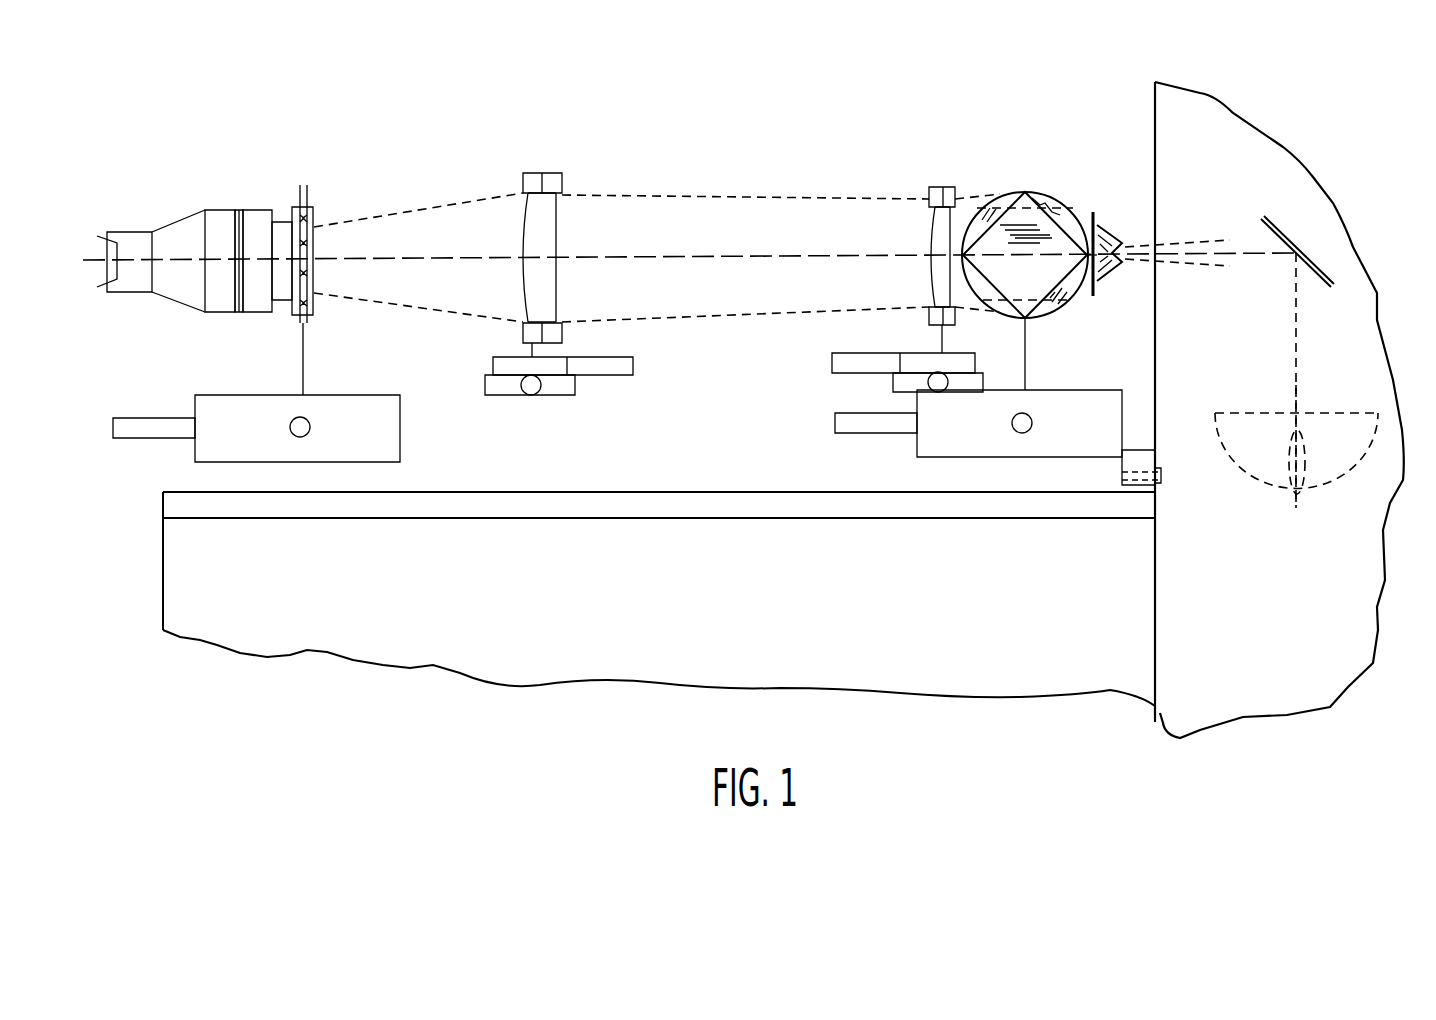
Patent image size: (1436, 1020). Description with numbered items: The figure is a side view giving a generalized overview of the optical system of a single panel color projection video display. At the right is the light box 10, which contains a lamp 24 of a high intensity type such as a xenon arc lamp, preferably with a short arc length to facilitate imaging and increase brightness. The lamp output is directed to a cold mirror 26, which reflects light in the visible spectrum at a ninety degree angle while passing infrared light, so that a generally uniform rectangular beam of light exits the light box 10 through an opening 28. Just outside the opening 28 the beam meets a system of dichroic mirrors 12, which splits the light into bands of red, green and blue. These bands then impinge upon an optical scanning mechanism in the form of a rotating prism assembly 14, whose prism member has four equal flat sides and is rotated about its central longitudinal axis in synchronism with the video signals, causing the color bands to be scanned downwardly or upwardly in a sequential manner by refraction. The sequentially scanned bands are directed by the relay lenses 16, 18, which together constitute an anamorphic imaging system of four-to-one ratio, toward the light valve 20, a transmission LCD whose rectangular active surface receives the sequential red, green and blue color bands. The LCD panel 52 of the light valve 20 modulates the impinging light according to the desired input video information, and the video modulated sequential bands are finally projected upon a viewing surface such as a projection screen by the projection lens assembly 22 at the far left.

The light box 10 is at (1153, 95).
The system of dichroic mirrors 12 is at (1090, 194).
The rotating prism assembly 14 is at (1018, 178).
The relay lens 16 is at (942, 176).
The relay lens 18 is at (528, 172).
The light valve 20 is at (302, 185).
The projection lens assembly 22 is at (170, 222).
The lamp 24 is at (1237, 458).
The cold mirror 26 is at (1287, 233).
The opening 28 is at (1154, 205).
The LCD panel 52 is at (314, 235).